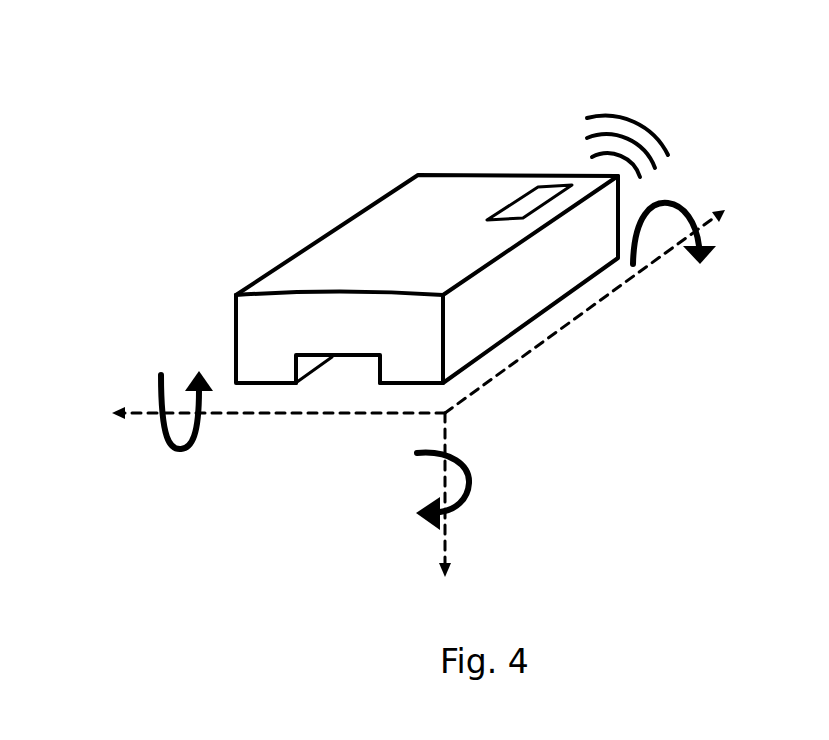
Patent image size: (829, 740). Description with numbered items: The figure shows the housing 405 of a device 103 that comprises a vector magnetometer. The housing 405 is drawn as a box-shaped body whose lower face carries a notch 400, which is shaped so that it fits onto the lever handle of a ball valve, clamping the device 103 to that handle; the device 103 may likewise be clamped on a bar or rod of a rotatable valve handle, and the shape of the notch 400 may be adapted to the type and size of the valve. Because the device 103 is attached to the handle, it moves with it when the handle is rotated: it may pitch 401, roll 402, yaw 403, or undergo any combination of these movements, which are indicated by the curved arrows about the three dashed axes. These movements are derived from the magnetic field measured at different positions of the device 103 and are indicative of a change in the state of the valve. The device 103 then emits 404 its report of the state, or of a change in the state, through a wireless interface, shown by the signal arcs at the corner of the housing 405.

The device 103 is at (420, 210).
The notch 400 is at (340, 395).
The pitch 401 is at (167, 438).
The roll 402 is at (708, 260).
The yaw 403 is at (468, 487).
The emitting 404 is at (648, 92).
The housing 405 is at (147, 244).